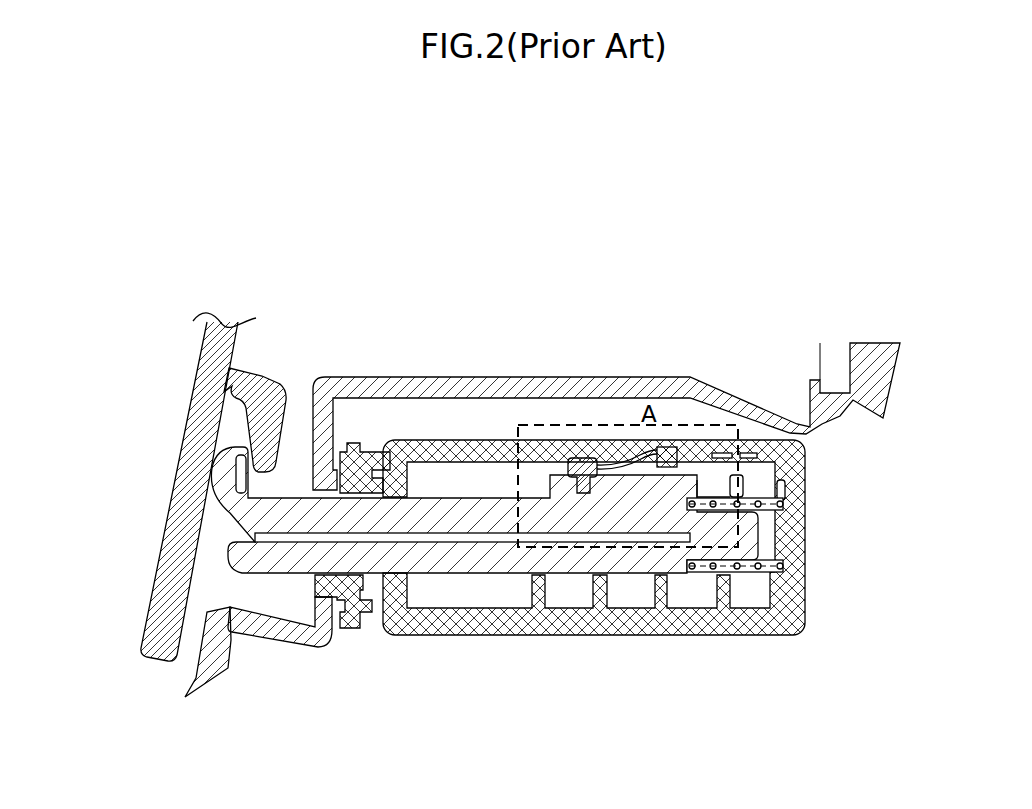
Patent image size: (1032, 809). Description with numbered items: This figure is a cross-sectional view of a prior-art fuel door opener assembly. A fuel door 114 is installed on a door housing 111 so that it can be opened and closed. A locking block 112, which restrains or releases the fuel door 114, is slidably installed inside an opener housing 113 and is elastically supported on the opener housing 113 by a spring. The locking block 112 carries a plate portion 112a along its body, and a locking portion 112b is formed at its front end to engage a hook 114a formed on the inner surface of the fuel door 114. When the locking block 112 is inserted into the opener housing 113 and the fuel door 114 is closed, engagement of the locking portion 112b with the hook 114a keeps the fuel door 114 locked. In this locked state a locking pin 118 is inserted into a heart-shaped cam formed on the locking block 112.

The door housing 111 is at (441, 386).
The locking block 112 is at (445, 562).
The plate of body 112a is at (488, 540).
The locking portion 112b is at (222, 483).
The opener housing 113 is at (707, 443).
The fuel door 114 is at (152, 592).
The hook 114a is at (275, 402).
The locking pin 118 is at (578, 462).